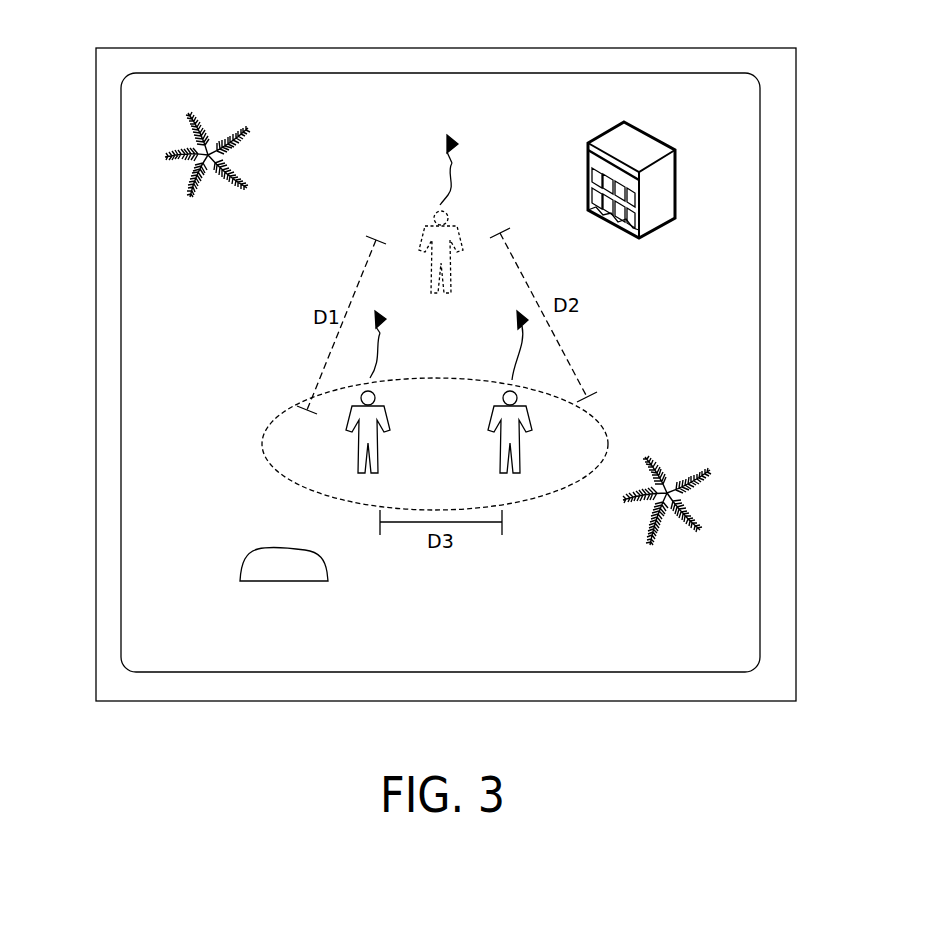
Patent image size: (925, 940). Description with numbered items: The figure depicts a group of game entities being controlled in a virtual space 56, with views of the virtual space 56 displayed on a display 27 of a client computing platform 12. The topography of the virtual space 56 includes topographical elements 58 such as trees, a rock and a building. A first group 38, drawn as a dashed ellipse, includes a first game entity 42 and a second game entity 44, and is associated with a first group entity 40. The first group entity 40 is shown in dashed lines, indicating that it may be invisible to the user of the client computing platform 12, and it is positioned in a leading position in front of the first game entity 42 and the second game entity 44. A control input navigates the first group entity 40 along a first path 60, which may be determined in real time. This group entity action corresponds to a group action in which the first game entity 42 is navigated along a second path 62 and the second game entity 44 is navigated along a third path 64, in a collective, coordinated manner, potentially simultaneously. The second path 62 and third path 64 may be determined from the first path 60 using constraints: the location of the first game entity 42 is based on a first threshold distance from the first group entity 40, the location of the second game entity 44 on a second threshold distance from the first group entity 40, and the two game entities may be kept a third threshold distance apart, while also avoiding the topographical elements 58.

The client computing platform 12 is at (123, 48).
The display 27 is at (121, 188).
The first group 38 is at (276, 420).
The first group entity 40 is at (425, 234).
The first game entity 42 is at (355, 445).
The second game entity 44 is at (527, 440).
The virtual space 56 is at (691, 118).
The topographical elements 58 is at (210, 200).
The first path 60 is at (452, 163).
The second path 62 is at (382, 331).
The third path 64 is at (515, 364).